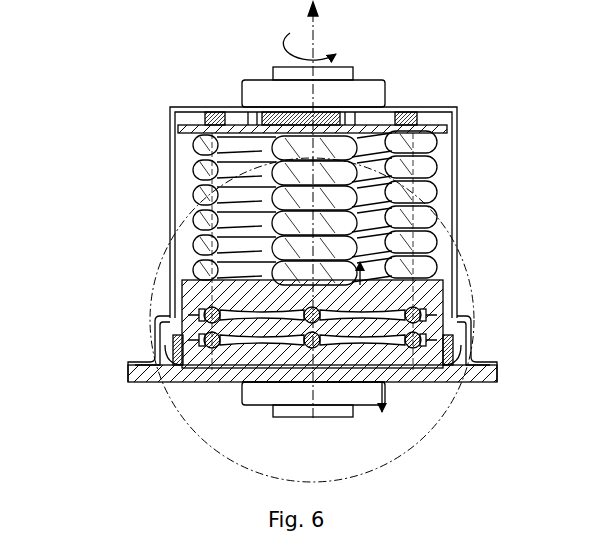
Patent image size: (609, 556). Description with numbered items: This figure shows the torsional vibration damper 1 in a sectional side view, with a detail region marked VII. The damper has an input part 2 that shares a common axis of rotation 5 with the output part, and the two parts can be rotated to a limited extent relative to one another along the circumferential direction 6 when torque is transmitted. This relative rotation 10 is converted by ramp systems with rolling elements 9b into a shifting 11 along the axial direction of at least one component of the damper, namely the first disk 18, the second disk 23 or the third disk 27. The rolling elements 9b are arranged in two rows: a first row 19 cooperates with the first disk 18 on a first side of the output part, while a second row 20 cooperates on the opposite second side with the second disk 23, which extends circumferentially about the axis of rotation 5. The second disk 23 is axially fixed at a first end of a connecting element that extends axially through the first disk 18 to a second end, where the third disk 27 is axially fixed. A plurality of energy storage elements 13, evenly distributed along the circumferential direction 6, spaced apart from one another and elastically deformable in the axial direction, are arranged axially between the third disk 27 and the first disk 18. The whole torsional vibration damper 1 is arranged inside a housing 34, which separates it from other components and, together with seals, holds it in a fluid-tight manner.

The torsional vibration damper 1 is at (427, 88).
The input part 2 is at (128, 368).
The axis of rotation 5 is at (308, 14).
The circumferential direction 6 is at (339, 52).
The rolling elements 9b is at (206, 311).
The relative rotation 10 is at (380, 383).
The shifting 11 is at (440, 272).
The energy storage elements 13 is at (366, 130).
The first disk 18 is at (443, 300).
The first row 19 is at (144, 343).
The second row 20 is at (152, 303).
The second disk 23 is at (400, 385).
The third disk 27 is at (458, 128).
The housing 34 is at (172, 118).
The detail view marker VII is at (466, 402).